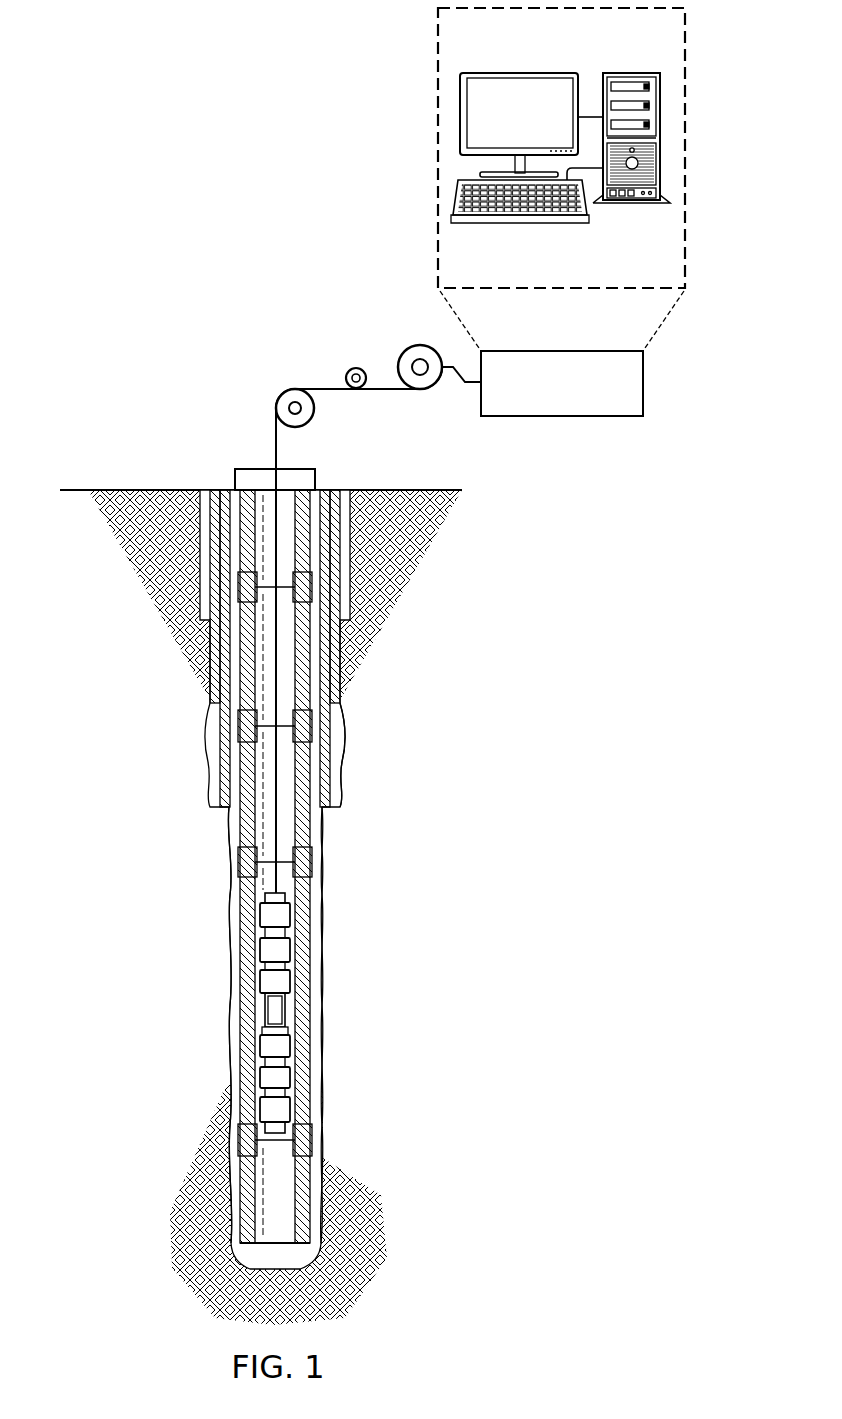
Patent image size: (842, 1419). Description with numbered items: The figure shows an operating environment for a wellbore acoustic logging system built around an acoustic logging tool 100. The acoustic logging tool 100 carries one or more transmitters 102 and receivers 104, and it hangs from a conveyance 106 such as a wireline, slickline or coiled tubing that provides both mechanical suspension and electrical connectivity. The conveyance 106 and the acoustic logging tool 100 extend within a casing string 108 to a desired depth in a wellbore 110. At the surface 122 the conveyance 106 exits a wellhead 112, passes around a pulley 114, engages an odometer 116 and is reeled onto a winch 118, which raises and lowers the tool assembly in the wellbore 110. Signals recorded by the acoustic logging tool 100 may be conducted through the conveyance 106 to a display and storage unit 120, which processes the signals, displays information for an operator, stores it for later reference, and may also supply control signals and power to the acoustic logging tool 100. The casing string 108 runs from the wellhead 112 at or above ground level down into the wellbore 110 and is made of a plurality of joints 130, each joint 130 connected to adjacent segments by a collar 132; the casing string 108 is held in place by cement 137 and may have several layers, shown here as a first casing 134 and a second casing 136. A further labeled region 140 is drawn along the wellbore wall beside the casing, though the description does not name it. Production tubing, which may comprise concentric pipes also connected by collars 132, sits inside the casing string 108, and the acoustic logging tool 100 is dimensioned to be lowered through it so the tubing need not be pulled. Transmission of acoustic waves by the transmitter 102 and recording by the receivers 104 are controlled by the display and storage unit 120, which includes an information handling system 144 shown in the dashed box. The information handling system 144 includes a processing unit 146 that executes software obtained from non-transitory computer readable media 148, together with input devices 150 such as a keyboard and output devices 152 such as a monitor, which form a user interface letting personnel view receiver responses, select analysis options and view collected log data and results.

The acoustic logging tool 100 is at (253, 1032).
The transmitter 102 is at (269, 913).
The receiver 104 is at (270, 948).
The conveyance 106 is at (278, 456).
The casing string 108 is at (186, 671).
The wellbore 110 is at (229, 834).
The wellhead 112 is at (253, 462).
The pulley 114 is at (281, 394).
The odometer 116 is at (349, 369).
The winch 118 is at (409, 351).
The display and storage unit 120 is at (644, 390).
The surface 122 is at (140, 490).
The joint 130 is at (225, 720).
The collar 132 is at (225, 754).
The first casing 134 is at (335, 723).
The second casing 136 is at (335, 678).
The cement 137 is at (339, 763).
The cement annulus 140 is at (322, 897).
The information handling system 144 is at (698, 96).
The processing unit 146 is at (634, 212).
The non-transitory computer readable media 148 is at (632, 72).
The input device 150 is at (527, 223).
The output device 152 is at (528, 72).